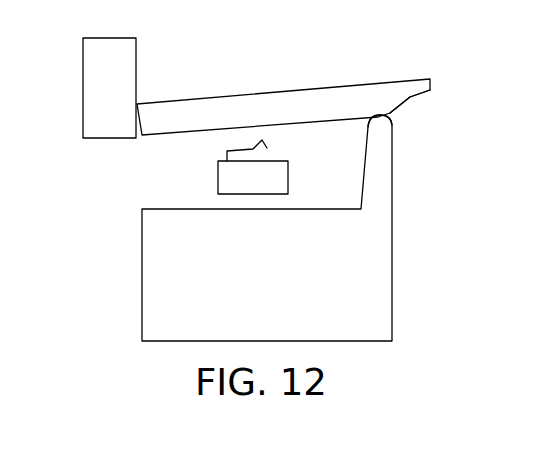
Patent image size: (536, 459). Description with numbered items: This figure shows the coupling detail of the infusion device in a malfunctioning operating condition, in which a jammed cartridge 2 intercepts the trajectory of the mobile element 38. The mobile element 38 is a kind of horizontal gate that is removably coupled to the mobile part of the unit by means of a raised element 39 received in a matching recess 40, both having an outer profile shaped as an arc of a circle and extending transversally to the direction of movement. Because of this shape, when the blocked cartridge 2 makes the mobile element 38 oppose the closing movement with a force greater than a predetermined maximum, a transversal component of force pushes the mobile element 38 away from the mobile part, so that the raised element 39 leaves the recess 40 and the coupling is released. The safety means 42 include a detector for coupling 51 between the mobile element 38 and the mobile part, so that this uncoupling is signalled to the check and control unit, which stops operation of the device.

The cartridge 2 is at (113, 82).
The mobile element 38 is at (275, 113).
The raised element 39 is at (378, 130).
The recess 40 is at (413, 108).
The safety means 42 is at (216, 138).
The detector for coupling 51 is at (260, 181).